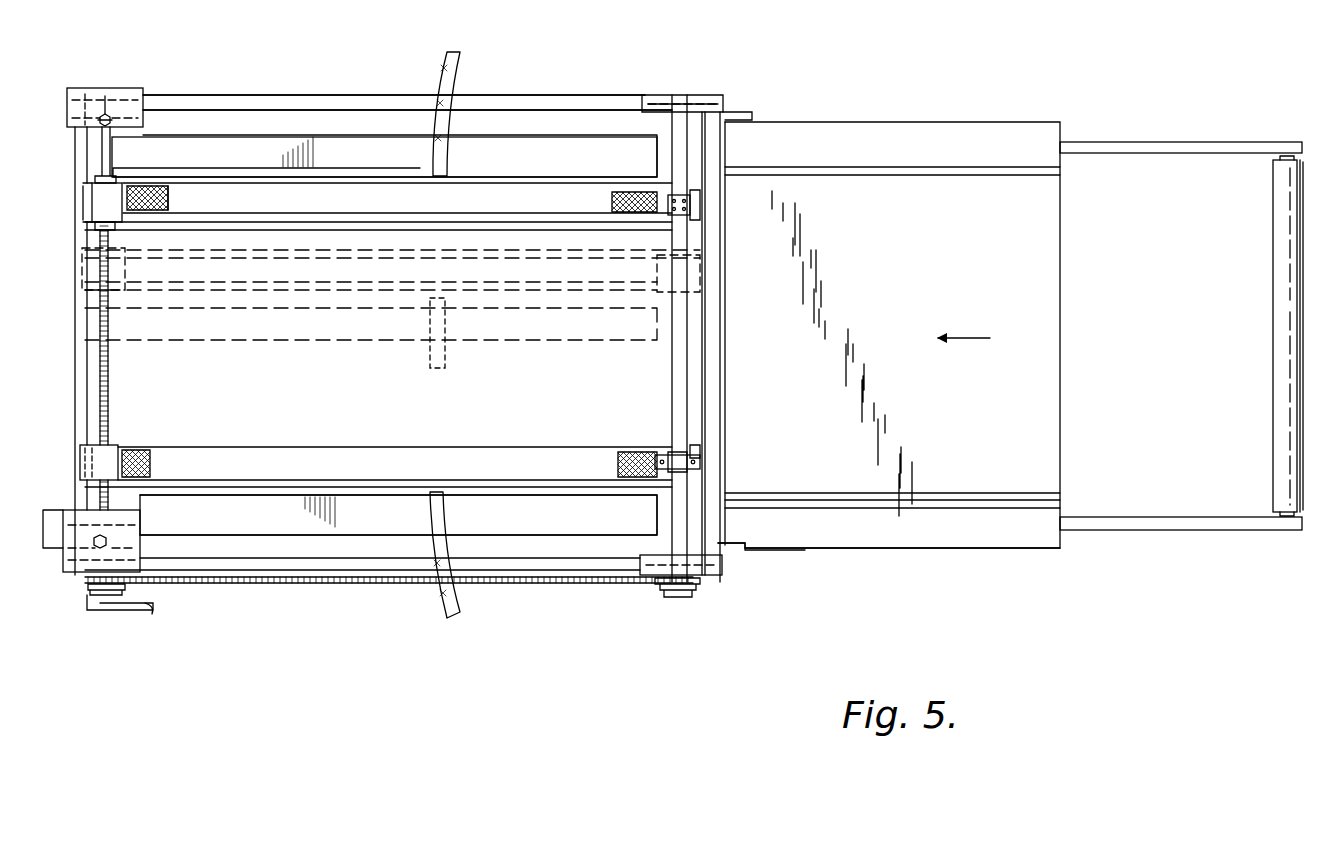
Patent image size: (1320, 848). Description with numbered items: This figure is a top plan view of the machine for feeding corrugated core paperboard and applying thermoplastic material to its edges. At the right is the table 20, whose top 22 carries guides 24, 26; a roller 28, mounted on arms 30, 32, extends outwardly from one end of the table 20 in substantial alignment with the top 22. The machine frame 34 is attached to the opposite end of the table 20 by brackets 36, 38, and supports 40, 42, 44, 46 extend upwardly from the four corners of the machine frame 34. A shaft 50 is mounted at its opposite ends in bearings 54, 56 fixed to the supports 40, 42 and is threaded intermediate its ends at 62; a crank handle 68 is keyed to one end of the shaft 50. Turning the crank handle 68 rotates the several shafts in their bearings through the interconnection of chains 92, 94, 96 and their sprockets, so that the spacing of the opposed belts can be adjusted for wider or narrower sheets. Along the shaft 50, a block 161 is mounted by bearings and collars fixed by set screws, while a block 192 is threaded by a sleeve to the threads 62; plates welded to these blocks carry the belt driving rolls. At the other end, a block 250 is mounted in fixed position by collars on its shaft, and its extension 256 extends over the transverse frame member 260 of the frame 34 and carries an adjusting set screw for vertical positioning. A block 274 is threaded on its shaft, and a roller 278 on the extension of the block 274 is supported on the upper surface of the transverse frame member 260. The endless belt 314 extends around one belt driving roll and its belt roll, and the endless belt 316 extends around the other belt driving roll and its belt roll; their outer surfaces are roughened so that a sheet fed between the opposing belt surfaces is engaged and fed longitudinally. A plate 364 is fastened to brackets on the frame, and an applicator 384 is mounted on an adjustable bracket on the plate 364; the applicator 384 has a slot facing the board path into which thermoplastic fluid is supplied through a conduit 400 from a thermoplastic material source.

The table 20 is at (1078, 120).
The top 22 is at (1055, 550).
The guide 24 is at (1020, 490).
The guide 26 is at (1040, 180).
The roller 28 is at (1280, 283).
The arm 30 is at (1222, 124).
The arm 32 is at (1208, 532).
The machine frame 34 is at (708, 82).
The bracket 36 is at (738, 113).
The bracket 38 is at (740, 552).
The support 40 is at (135, 92).
The support 42 is at (140, 567).
The support 44 is at (667, 80).
The support 46 is at (705, 583).
The shaft 50 is at (105, 153).
The bearing 54 is at (117, 90).
The bearing 56 is at (88, 568).
The threads 62 is at (106, 372).
The crank handle 68 is at (155, 614).
The chain 92 is at (87, 612).
The chain 94 is at (545, 592).
The chain 96 is at (660, 600).
The block 161 is at (120, 222).
The block 192 is at (104, 454).
The block 250 is at (707, 270).
The extension 256 is at (693, 208).
The transverse frame member 260 is at (678, 370).
The block 274 is at (700, 450).
The roller 278 is at (702, 462).
The endless belt 314 is at (252, 166).
The endless belt 316 is at (317, 434).
The plate 364 is at (357, 145).
The applicator 384 is at (452, 175).
The conduit 400 is at (462, 62).